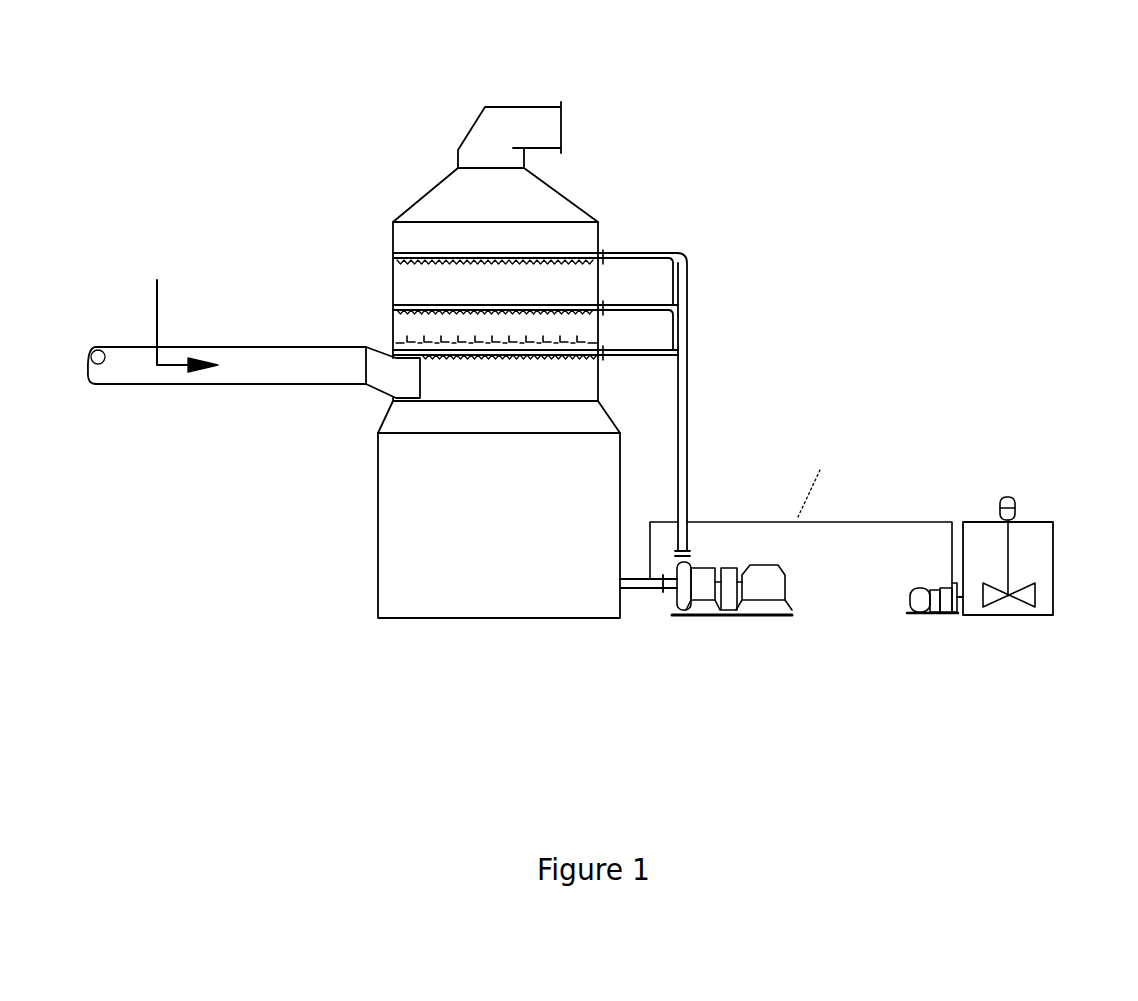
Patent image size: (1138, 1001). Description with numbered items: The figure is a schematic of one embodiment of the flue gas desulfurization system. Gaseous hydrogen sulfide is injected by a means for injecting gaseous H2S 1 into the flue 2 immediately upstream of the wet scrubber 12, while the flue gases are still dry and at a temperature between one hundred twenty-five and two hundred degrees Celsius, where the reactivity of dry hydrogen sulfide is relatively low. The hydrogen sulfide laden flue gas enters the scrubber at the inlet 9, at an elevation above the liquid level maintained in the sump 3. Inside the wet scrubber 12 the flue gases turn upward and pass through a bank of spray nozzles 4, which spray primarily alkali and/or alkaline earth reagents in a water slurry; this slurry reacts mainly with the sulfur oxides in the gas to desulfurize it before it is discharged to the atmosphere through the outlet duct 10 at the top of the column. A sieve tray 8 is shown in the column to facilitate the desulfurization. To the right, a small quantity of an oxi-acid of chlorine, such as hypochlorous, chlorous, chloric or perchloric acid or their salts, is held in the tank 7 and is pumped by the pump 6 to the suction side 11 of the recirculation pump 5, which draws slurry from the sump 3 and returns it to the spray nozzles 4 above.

The means for injecting gaseous H2S 1 is at (167, 309).
The flue 2 is at (298, 362).
The sump 3 is at (499, 525).
The bank of spray nozzles 4 is at (660, 347).
The recirculation pump 5 is at (767, 619).
The pump 6 is at (933, 614).
The tank 7 is at (1055, 560).
The sieve tray 8 is at (424, 338).
The scrubber inlet 9 is at (398, 380).
The gas outlet duct 10 is at (533, 130).
The suction side of the recirculation pump 11 is at (660, 596).
The wet scrubber 12 is at (482, 230).